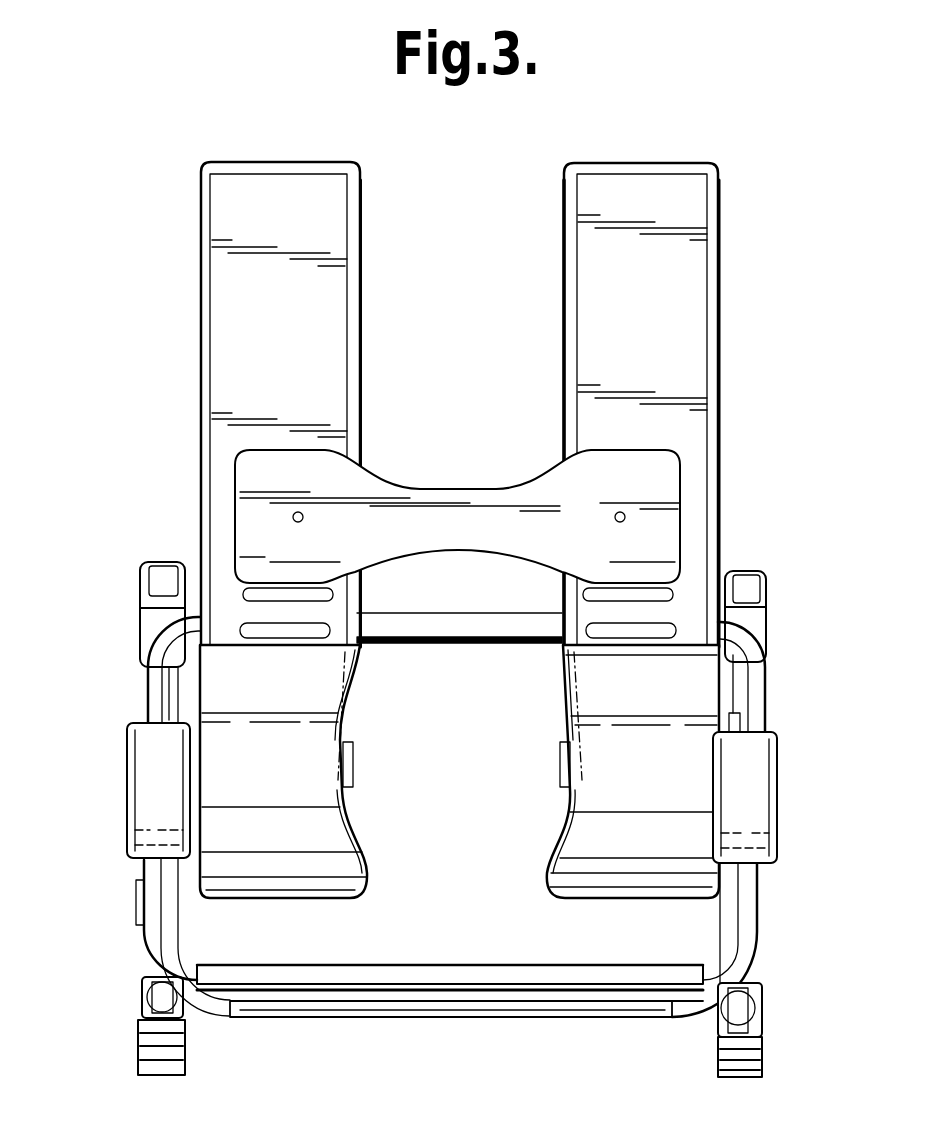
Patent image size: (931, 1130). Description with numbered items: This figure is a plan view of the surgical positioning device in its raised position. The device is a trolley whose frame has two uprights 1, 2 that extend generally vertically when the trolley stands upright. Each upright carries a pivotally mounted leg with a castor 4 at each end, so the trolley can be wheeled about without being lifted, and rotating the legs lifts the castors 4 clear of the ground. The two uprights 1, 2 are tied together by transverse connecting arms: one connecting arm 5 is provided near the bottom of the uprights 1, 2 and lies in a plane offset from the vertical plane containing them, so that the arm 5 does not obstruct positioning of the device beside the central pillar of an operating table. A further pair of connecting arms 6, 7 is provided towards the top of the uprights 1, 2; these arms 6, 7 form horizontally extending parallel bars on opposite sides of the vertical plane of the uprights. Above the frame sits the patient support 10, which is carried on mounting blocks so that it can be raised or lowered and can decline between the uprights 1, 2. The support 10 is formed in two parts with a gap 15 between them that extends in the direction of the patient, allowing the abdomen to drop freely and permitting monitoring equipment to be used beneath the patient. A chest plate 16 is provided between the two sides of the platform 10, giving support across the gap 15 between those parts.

The upright 1 is at (780, 795).
The upright 2 is at (127, 781).
The castor 4 is at (143, 615).
The connecting arm 5 is at (435, 1020).
The connecting arm 6 is at (443, 963).
The connecting arm 7 is at (461, 627).
The patient support 10 is at (225, 322).
The gap 15 is at (455, 530).
The chest plate 16 is at (452, 505).